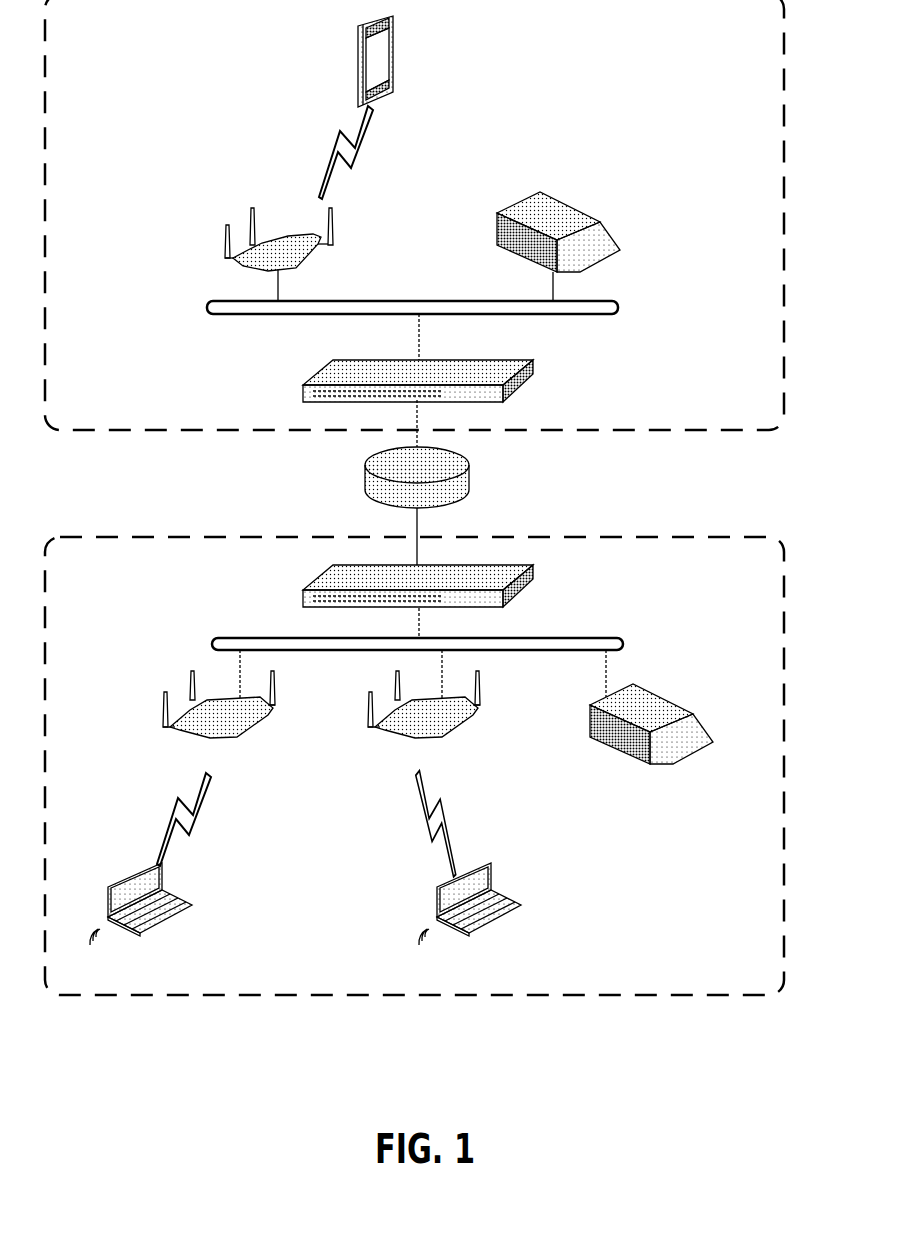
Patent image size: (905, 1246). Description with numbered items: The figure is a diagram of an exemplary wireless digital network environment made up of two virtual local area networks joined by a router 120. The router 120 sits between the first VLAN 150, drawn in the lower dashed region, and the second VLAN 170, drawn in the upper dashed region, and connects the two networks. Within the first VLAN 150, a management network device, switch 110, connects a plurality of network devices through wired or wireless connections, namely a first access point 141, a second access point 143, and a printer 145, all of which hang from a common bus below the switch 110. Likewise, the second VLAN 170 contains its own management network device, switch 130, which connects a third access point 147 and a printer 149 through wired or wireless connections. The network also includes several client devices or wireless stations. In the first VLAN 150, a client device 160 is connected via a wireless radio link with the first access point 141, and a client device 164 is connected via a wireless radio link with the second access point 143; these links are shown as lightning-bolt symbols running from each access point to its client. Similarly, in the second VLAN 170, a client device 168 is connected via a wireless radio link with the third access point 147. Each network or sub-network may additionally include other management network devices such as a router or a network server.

The switch 110 is at (267, 608).
The router 120 is at (323, 503).
The switch 130 is at (268, 403).
The access point AP1 141 is at (252, 771).
The access point AP2 143 is at (450, 771).
The printer 145 is at (658, 822).
The access point AP3 147 is at (318, 203).
The printer 149 is at (565, 177).
The VLAN 1 150 is at (110, 600).
The client device 160 is at (187, 950).
The client device 164 is at (525, 950).
The client device 168 is at (430, 71).
The VLAN 2 170 is at (118, 70).